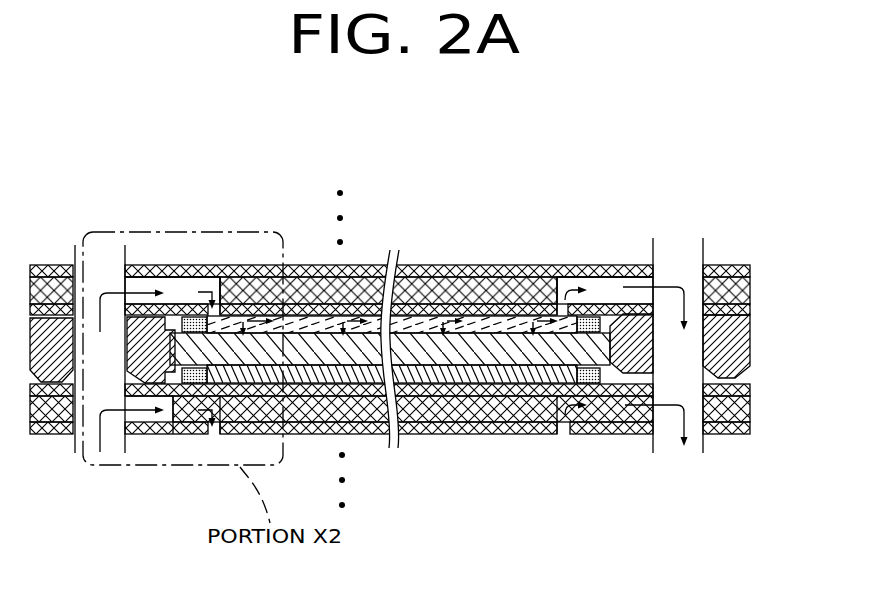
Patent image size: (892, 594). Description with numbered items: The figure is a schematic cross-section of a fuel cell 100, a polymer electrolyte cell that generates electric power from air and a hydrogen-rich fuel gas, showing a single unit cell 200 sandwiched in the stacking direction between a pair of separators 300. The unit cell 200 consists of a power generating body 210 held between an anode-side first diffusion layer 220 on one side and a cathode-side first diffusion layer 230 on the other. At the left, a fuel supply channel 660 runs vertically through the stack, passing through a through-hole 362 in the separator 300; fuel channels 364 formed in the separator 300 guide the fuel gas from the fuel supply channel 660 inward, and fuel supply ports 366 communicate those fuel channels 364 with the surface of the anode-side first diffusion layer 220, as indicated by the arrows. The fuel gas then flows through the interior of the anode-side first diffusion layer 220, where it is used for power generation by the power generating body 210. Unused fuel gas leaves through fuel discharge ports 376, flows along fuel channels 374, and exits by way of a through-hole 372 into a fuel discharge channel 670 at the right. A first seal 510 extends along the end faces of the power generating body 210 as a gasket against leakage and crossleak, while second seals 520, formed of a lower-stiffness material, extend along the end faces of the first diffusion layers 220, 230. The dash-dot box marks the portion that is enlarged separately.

The fuel cell 100 is at (555, 195).
The unit cell 200 is at (547, 208).
The power generating body 210 is at (474, 347).
The anode-side first diffusion layer 220 is at (407, 326).
The cathode-side first diffusion layer 230 is at (503, 370).
The separator 300 is at (753, 263).
The through-hole 362 is at (124, 273).
The fuel channels 364 is at (193, 293).
The fuel supply ports 366 is at (216, 302).
The through-hole 372 is at (655, 270).
The fuel channels 374 is at (588, 283).
The fuel discharge ports 376 is at (566, 310).
The first seal 510 is at (174, 435).
The second seals 520 is at (200, 435).
The fuel supply channel 660 is at (124, 252).
The fuel discharge channel 670 is at (653, 252).